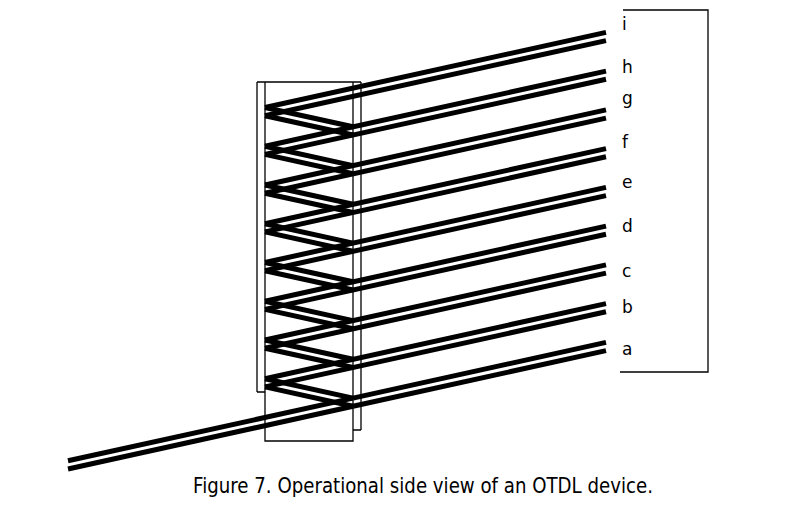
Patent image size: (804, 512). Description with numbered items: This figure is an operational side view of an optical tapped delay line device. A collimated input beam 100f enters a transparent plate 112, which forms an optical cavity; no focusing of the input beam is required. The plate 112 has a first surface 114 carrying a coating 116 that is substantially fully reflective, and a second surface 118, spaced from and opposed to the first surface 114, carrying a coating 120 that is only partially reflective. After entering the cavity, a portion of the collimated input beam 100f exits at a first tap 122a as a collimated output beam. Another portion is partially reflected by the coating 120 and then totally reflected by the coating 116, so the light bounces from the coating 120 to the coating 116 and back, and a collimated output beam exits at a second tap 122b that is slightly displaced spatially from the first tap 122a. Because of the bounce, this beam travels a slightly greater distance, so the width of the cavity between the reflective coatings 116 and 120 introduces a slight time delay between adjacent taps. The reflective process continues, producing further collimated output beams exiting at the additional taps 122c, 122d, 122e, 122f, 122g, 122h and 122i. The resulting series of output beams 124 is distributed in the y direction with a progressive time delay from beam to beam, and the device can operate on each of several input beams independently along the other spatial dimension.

The collimated input beam 100f is at (193, 434).
The transparent plate 112 is at (309, 262).
The first surface 114 is at (265, 95).
The coating 116 is at (246, 225).
The second surface 118 is at (351, 83).
The coating 120 is at (368, 266).
The tap 122a is at (479, 374).
The tap 122b is at (435, 345).
The tap 122c is at (435, 306).
The tap 122d is at (435, 267).
The tap 122e is at (435, 228).
The tap 122f is at (435, 190).
The tap 122g is at (435, 151).
The tap 122h is at (435, 112).
The tap 122i is at (435, 73).
The collimated output beams 124 is at (708, 193).